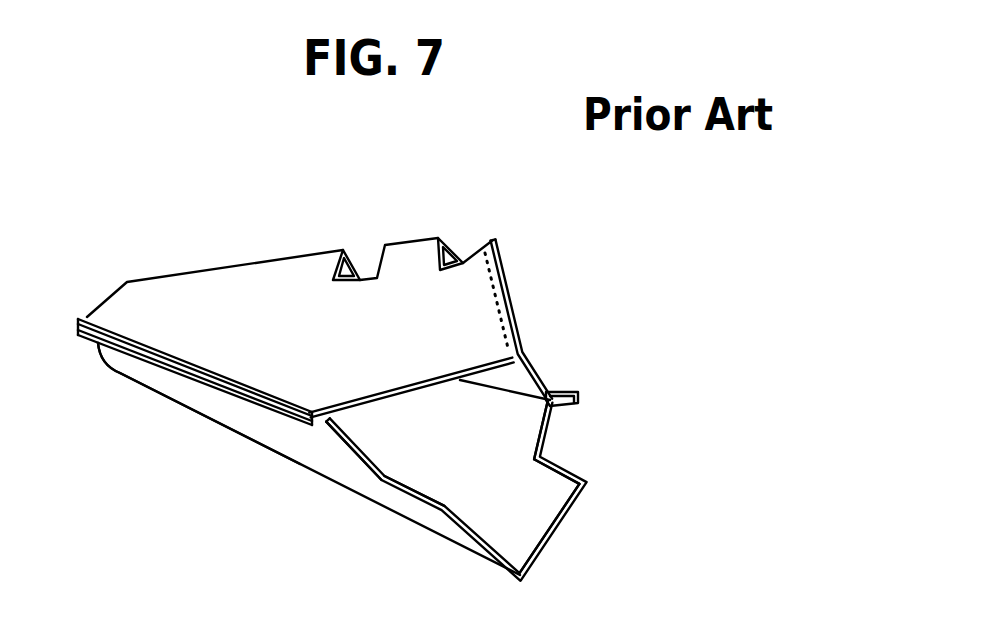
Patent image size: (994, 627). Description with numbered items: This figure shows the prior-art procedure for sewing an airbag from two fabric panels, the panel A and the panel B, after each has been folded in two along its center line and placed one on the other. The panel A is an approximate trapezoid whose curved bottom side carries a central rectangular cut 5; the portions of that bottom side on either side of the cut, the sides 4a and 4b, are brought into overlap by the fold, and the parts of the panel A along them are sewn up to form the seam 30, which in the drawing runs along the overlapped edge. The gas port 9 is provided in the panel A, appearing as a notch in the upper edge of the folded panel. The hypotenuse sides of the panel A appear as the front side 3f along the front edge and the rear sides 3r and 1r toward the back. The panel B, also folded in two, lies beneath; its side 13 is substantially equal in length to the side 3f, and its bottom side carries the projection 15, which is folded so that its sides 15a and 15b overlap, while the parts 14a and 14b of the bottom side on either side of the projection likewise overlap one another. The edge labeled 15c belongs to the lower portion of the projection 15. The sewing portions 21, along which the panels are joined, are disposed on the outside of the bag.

The panel A is at (237, 275).
The gas port 9 is at (363, 258).
The rectangular cut 5 is at (461, 233).
The seam 30 is at (493, 290).
The side 4a is at (517, 315).
The side 4b is at (497, 327).
The rear side 3r is at (382, 390).
The front side 3f is at (177, 353).
The rear side 1r is at (530, 368).
The side 13 is at (170, 370).
The panel B is at (188, 398).
The sewing portion 21 is at (233, 380).
The part of side 14a is at (555, 427).
The part of side 14b is at (350, 455).
The projection 15 is at (545, 512).
The side 15a is at (580, 472).
The side 15b is at (410, 500).
The lower frame bottom portion 15c is at (540, 550).